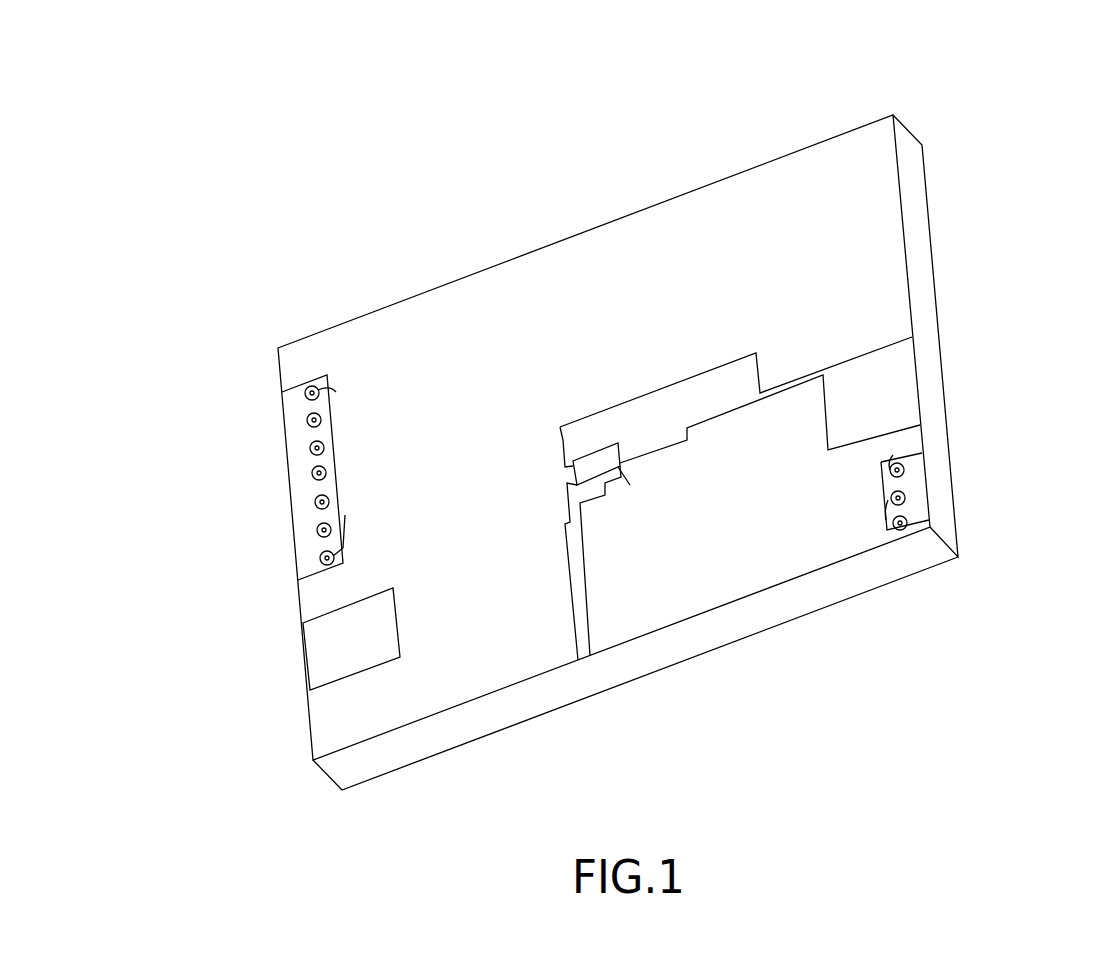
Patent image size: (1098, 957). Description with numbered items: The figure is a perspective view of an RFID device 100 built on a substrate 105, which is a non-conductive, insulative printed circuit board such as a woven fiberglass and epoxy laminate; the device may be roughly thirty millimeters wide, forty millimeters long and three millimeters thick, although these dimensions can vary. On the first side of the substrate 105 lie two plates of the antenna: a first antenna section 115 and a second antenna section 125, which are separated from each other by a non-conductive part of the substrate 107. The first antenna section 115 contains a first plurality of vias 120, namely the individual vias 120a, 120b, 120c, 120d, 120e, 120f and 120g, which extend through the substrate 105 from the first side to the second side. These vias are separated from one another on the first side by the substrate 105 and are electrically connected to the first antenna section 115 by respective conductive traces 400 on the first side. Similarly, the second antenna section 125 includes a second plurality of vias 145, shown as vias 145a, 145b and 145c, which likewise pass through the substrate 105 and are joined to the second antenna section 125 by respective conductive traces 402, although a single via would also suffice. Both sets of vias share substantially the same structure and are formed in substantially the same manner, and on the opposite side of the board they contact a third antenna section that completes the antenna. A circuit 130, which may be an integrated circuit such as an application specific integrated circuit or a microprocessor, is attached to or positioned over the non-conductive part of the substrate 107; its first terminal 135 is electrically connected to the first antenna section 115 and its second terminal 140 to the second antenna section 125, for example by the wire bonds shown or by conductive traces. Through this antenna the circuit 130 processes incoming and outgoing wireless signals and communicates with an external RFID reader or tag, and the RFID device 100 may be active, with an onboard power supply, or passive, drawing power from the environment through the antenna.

The RFID device 100 is at (1079, 73).
The substrate 105 is at (305, 485).
The non-conductive part of the substrate 107 is at (670, 410).
The first antenna section 115 is at (462, 313).
The first plurality of vias 120 is at (378, 355).
The via 120a is at (320, 560).
The via 120b is at (317, 532).
The via 120c is at (315, 503).
The via 120d is at (312, 472).
The via 120e is at (310, 446).
The via 120f is at (307, 417).
The via 120g is at (312, 386).
The second antenna section 125 is at (768, 524).
The circuit 130 is at (590, 450).
The first terminal 135 is at (560, 452).
The second terminal 140 is at (622, 472).
The second plurality of vias 145 is at (870, 452).
The via 145a is at (908, 522).
The via 145b is at (906, 497).
The via 145c is at (905, 468).
The conductive traces 400 is at (323, 447).
The conductive traces 402 is at (893, 455).